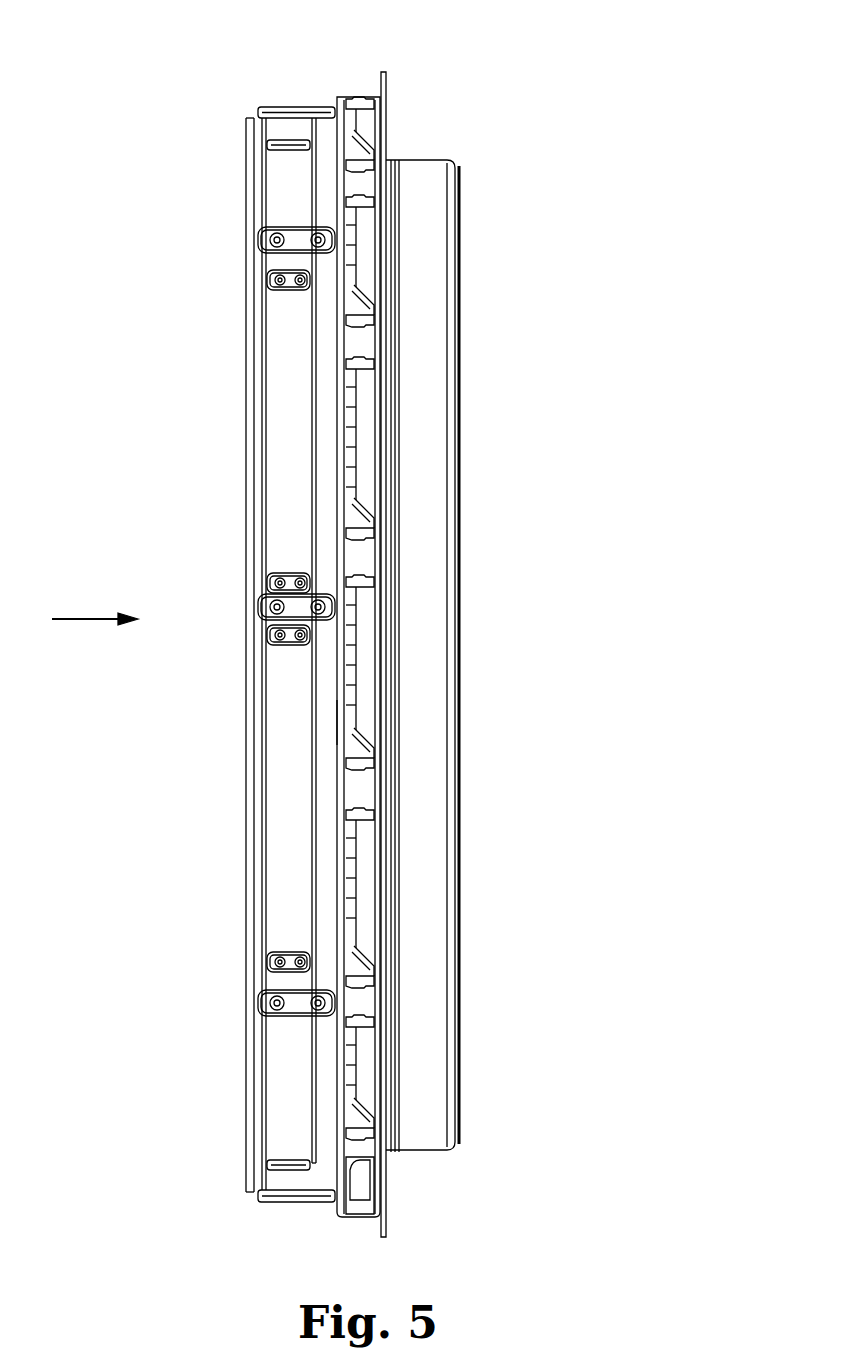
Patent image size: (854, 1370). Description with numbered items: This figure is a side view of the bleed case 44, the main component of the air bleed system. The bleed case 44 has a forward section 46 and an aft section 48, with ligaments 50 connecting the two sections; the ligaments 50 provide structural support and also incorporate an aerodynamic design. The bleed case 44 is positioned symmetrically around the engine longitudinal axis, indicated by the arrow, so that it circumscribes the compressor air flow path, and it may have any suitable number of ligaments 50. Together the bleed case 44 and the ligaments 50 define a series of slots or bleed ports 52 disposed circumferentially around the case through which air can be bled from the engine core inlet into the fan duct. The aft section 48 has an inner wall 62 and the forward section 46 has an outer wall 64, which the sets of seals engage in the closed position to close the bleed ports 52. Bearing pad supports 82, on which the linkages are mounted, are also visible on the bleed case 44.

The bleed case 44 is at (437, 655).
The forward section 46 is at (343, 65).
The aft section 48 is at (458, 65).
The ligaments 50 is at (352, 100).
The bleed ports 52 is at (366, 274).
The inner wall 62 is at (382, 1217).
The outer wall 64 is at (337, 722).
The bearing pad supports 82 is at (293, 112).